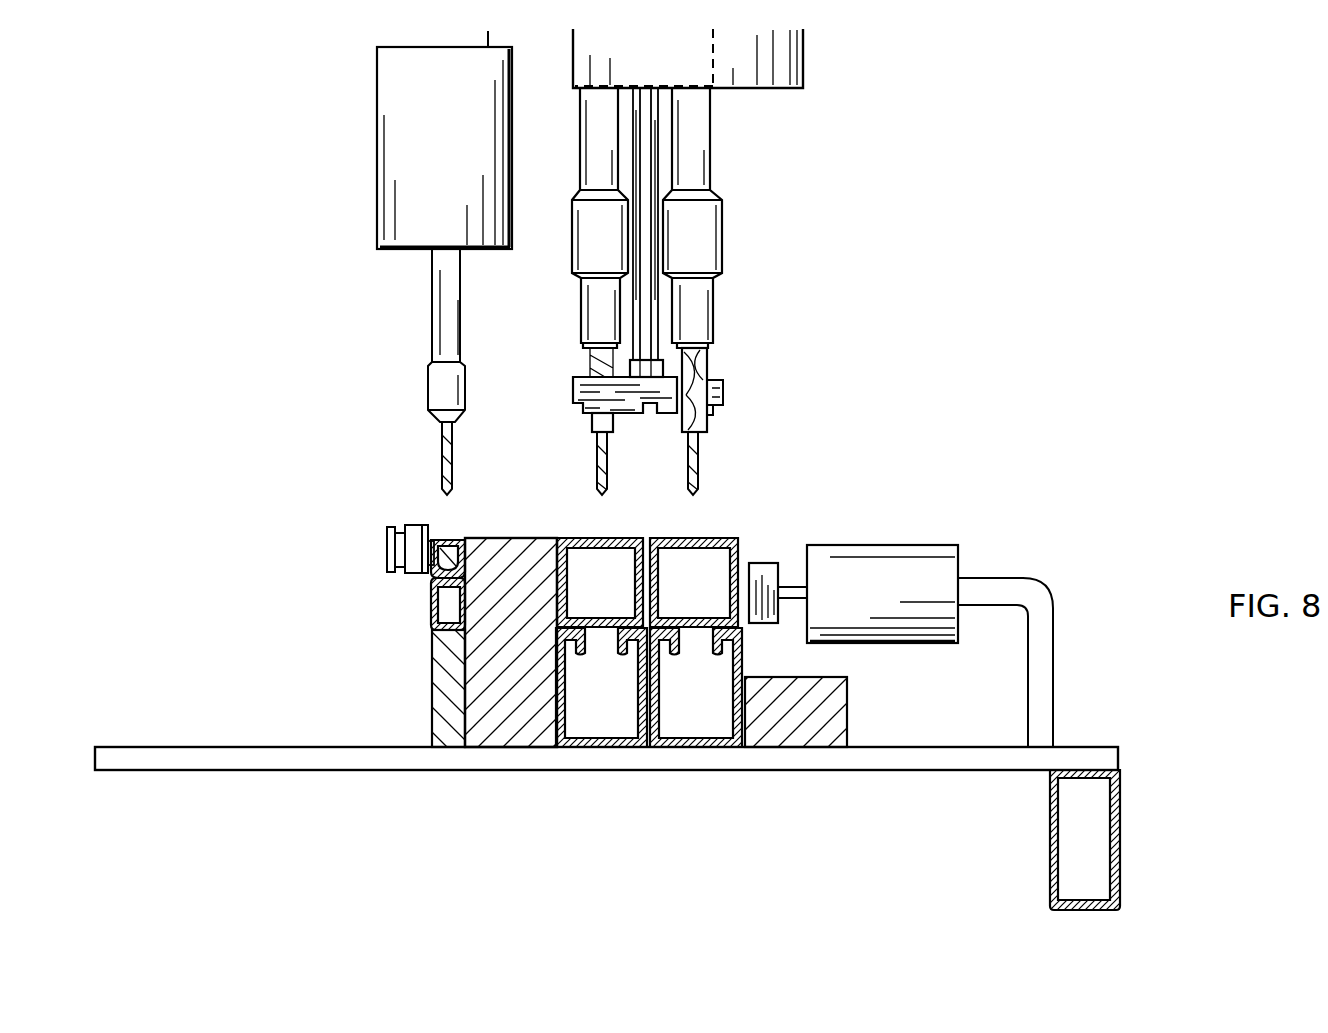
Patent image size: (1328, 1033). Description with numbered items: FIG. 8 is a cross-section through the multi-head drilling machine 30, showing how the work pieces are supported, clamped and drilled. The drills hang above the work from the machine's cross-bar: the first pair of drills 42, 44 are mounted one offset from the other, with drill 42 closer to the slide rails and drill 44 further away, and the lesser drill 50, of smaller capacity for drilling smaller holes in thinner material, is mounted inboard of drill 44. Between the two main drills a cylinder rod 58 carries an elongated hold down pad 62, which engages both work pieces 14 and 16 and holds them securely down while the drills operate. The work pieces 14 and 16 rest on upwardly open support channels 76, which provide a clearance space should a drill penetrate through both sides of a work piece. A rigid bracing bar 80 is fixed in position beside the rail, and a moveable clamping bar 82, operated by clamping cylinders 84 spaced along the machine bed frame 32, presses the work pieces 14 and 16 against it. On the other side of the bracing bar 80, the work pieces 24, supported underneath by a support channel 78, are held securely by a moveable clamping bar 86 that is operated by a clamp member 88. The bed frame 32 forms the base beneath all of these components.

The multi-head drilling machine 30 is at (908, 296).
The lesser drill 50 is at (377, 170).
The first drill of the first pair 42 is at (543, 90).
The second drill of the first pair 44 is at (763, 95).
The cylinder rod 58 is at (662, 310).
The hold down pad 62 is at (723, 392).
The work piece 14 is at (588, 535).
The work piece 16 is at (718, 535).
The support channel 76 is at (568, 700).
The rigid bracing bar 80 is at (540, 535).
The work piece 24 is at (445, 540).
The moveable clamping bar 86 is at (425, 575).
The support channel 78 is at (432, 607).
The clamp member 88 is at (391, 525).
The moveable clamping bar 82 is at (770, 560).
The clamping cylinder 84 is at (880, 557).
The machine bed frame 32 is at (1050, 810).